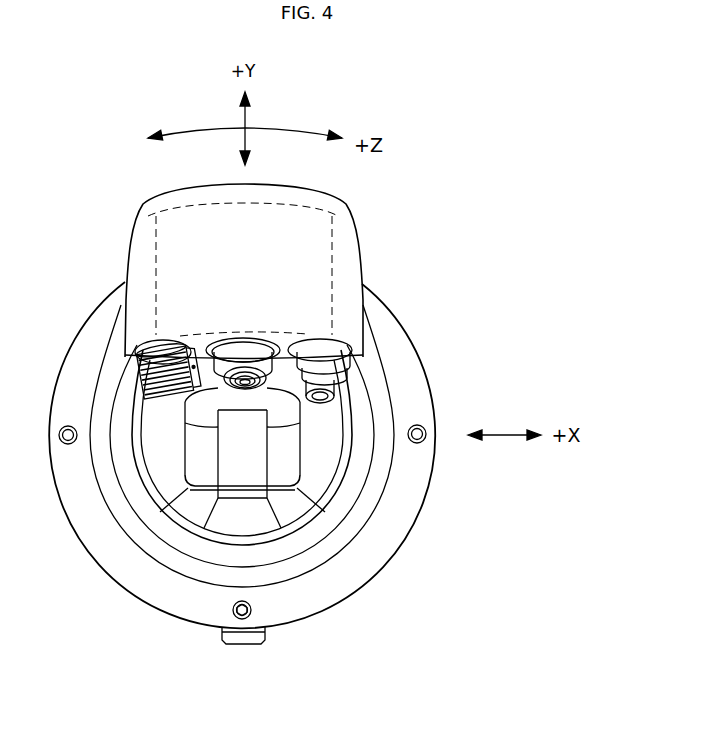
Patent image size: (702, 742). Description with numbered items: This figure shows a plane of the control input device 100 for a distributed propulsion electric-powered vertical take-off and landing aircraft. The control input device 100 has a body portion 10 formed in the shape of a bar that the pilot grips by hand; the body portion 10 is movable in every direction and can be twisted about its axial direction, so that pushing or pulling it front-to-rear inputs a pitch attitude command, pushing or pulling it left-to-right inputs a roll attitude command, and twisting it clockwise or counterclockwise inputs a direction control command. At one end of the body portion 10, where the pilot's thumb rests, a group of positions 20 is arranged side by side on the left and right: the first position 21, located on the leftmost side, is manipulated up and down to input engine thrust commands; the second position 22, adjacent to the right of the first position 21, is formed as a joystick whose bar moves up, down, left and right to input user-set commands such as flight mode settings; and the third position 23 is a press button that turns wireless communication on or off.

The control input device 100 is at (126, 171).
The body portion 10 is at (207, 418).
The connector body 20 is at (267, 702).
The first position 21 is at (173, 418).
The second position 22 is at (247, 388).
The third position 23 is at (322, 388).